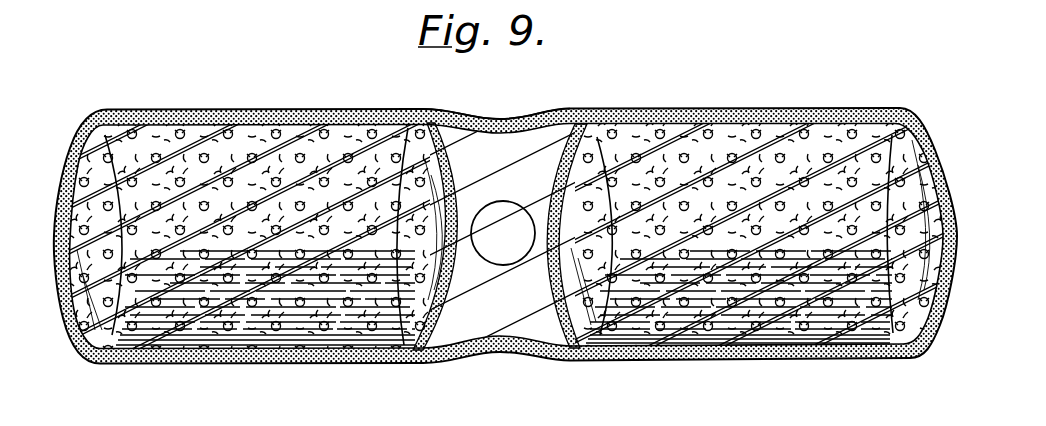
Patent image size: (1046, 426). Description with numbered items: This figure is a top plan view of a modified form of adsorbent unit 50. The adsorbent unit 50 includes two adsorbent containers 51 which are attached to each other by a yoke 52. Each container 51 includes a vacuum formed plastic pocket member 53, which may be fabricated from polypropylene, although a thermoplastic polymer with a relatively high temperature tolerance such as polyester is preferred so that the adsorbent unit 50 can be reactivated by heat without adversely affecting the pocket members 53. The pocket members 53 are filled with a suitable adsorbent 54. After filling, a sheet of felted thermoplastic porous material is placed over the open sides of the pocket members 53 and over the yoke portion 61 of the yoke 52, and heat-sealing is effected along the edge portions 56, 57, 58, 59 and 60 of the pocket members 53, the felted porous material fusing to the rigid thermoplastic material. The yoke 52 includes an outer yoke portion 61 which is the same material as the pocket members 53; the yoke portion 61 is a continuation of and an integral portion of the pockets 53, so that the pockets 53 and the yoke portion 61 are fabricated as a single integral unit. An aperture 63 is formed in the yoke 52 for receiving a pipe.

The adsorbent unit 50 is at (632, 86).
The adsorbent container 51 is at (164, 104).
The yoke 52 is at (487, 119).
The pocket member 53 is at (283, 130).
The adsorbent 54 is at (247, 340).
The edge portion 56 is at (182, 363).
The edge portion 57 is at (53, 188).
The edge portion 58 is at (233, 112).
The edge portion 59 is at (527, 120).
The edge portion 60 is at (557, 170).
The yoke portion 61 is at (520, 313).
The aperture 63 is at (477, 221).